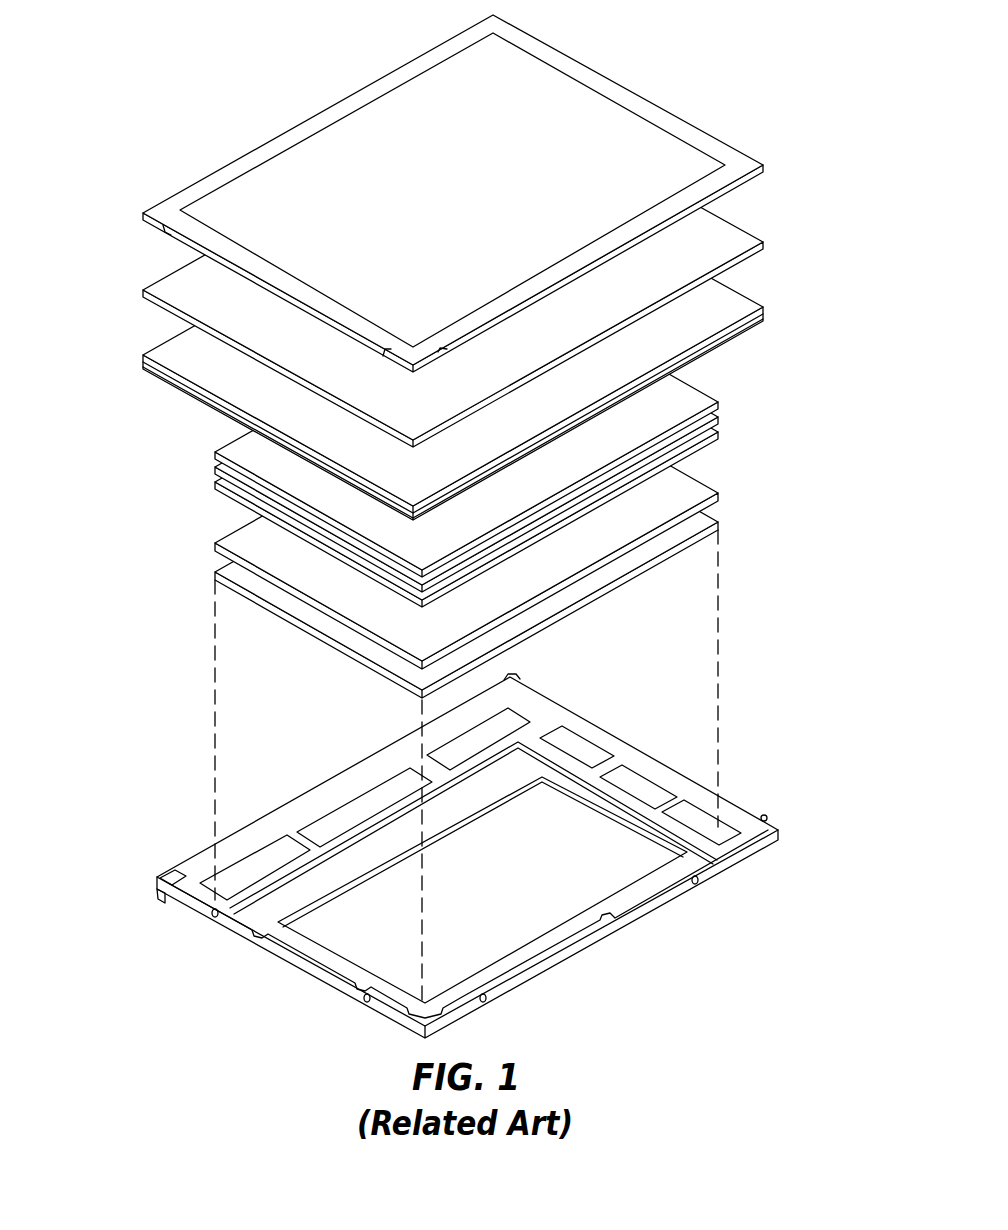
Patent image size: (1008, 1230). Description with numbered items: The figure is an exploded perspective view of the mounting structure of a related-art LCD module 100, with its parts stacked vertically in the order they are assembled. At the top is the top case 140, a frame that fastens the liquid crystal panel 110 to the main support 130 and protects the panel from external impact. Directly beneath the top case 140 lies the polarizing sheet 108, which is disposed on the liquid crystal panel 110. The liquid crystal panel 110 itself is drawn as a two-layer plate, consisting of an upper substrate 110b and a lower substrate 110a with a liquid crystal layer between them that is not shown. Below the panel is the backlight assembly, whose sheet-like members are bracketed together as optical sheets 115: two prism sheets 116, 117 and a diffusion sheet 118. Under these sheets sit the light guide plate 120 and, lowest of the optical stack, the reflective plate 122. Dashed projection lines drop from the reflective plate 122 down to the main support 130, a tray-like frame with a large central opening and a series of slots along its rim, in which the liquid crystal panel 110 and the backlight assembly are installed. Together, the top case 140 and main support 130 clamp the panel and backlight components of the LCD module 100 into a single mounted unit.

The LCD module 100 is at (52, 213).
The polarizing sheet 108 is at (744, 233).
The liquid crystal panel 110 is at (524, 338).
The lower substrate 110a is at (766, 326).
The upper substrate 110b is at (766, 311).
The optical sheets 115 is at (543, 445).
The prism sheet 116 is at (494, 430).
The prism sheet 117 is at (718, 417).
The diffusion sheet 118 is at (718, 435).
The light guide plate 120 is at (718, 491).
The reflective plate 122 is at (720, 527).
The main support 130 is at (748, 822).
The top case 140 is at (703, 133).